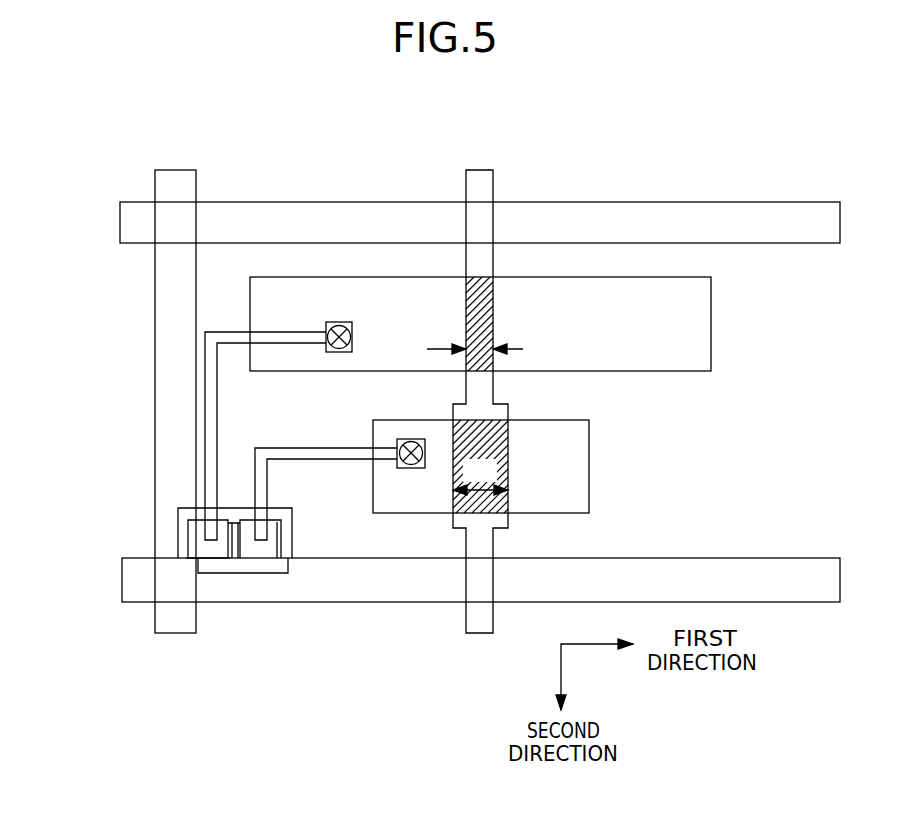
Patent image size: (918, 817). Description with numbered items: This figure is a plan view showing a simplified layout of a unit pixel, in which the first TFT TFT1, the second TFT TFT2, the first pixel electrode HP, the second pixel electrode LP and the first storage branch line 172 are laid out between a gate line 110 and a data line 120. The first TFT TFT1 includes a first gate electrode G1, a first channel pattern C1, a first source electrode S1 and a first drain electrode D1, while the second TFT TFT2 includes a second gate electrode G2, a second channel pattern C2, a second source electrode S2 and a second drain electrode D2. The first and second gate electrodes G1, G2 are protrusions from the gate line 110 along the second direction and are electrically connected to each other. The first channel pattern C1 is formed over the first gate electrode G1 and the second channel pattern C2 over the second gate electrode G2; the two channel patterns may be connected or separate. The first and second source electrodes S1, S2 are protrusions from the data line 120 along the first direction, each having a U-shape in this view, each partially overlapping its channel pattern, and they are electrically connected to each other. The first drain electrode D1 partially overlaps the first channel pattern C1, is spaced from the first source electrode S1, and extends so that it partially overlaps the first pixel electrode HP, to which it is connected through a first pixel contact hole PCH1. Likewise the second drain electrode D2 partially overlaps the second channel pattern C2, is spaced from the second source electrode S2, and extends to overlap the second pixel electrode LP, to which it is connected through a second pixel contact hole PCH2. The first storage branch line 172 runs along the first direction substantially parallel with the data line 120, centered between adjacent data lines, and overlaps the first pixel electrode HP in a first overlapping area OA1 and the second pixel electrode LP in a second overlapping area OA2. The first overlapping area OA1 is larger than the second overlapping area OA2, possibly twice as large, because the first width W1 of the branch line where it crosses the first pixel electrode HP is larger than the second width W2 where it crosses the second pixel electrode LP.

The gate line 110 is at (398, 590).
The data line 120 is at (167, 382).
The first storage branch line 172 is at (485, 173).
The second pixel electrode LP is at (711, 325).
The first pixel electrode HP is at (589, 475).
The first overlapping area OA1 is at (509, 440).
The second overlapping area OA2 is at (494, 300).
The first width W1 is at (480, 477).
The second width W2 is at (469, 339).
The first pixel contact hole PCH1 is at (413, 468).
The second pixel contact hole PCH2 is at (340, 352).
The first TFT TFT1 is at (287, 590).
The second TFT TFT2 is at (171, 448).
The first gate electrode G1 is at (292, 552).
The first drain electrode D1 is at (266, 575).
The first source electrode S1 is at (276, 577).
The first channel pattern C1 is at (233, 607).
The second gate electrode G2 is at (190, 527).
The second drain electrode D2 is at (196, 540).
The second source electrode S2 is at (158, 553).
The second channel pattern C2 is at (197, 553).